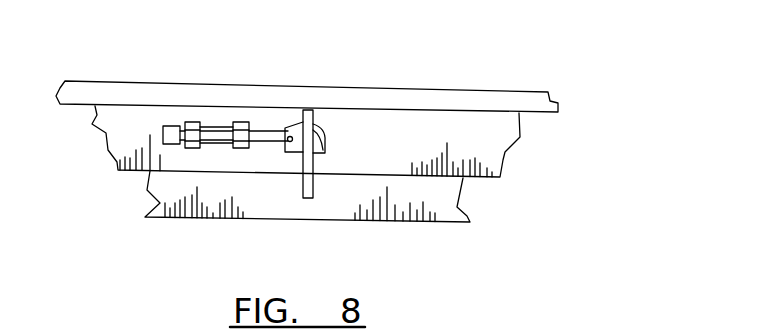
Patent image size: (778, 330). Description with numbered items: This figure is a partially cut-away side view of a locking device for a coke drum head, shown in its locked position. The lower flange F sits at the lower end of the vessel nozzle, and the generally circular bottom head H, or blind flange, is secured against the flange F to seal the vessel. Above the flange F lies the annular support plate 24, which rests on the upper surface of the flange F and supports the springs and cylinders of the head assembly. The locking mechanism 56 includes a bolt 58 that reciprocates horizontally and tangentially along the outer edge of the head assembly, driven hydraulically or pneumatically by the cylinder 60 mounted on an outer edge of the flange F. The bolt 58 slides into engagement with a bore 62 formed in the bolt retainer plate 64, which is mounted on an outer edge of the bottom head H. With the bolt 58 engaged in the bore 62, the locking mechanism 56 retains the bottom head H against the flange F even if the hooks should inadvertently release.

The support plate 24 is at (500, 98).
The locking mechanism 56 is at (237, 143).
The bolt 58 is at (263, 135).
The cylinder 60 is at (218, 135).
The bore 62 is at (322, 147).
The bolt retainer plate 64 is at (310, 190).
The lower flange F is at (377, 135).
The bottom head H is at (332, 205).